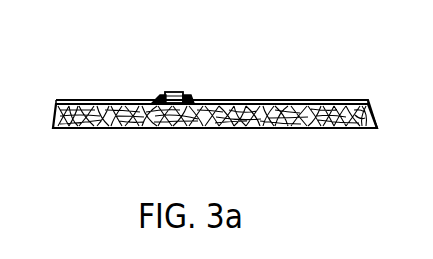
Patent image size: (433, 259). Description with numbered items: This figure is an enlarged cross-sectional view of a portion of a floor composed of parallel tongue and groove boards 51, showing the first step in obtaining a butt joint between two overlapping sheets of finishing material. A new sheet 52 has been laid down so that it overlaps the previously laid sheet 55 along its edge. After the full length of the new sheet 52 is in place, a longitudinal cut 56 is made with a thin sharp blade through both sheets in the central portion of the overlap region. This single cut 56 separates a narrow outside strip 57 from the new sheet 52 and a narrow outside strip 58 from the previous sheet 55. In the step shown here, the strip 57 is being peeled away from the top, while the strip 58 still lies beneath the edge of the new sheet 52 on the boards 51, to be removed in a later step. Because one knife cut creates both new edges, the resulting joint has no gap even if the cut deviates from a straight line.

The tongue and groove boards 51 is at (283, 128).
The sheet 52 is at (77, 100).
The sheet 55 is at (335, 100).
The longitudinal cut 56 is at (171, 92).
The outside strip 57 is at (190, 92).
The outside strip 58 is at (159, 96).